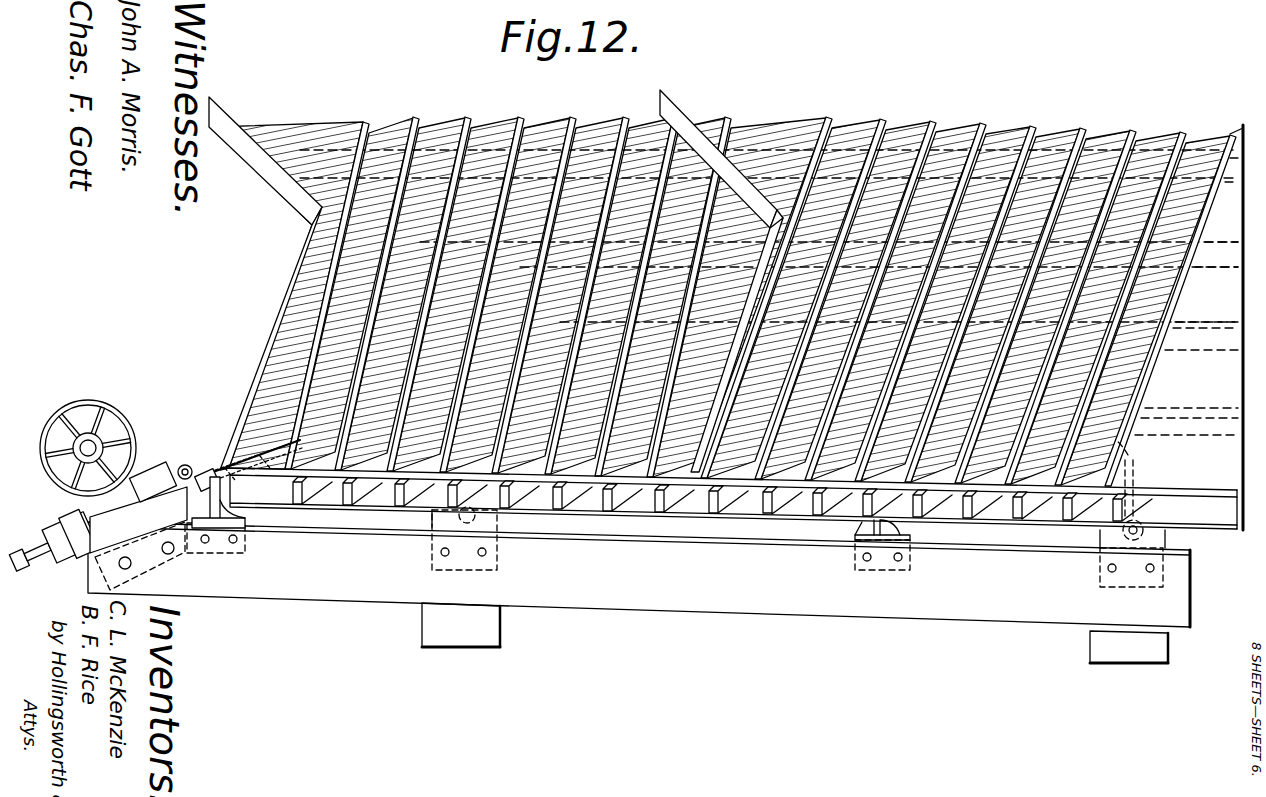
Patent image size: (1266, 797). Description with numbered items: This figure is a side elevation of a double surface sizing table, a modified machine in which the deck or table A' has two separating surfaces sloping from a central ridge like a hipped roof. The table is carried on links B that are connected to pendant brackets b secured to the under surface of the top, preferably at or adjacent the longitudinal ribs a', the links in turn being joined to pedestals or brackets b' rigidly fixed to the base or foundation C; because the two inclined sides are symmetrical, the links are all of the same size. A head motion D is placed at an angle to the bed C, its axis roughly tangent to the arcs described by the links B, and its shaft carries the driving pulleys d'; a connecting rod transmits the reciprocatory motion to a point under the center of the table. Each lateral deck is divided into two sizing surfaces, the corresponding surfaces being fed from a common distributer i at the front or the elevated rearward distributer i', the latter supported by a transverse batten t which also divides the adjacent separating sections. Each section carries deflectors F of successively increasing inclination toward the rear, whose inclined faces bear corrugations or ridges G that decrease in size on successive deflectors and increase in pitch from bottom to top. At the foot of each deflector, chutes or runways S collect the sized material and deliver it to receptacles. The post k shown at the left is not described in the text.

The corrugations or ridges G is at (725, 301).
The slat edge strips f' is at (742, 284).
The deflector F is at (1012, 140).
The slat strip f is at (881, 286).
The distributer i is at (265, 280).
The rearward distributer or feed section i' is at (721, 156).
The transverse batten t is at (737, 345).
The deck or table A' is at (1214, 327).
The longitudinal ribs a' is at (1186, 296).
The chutes or runways S is at (729, 498).
The base or foundation C is at (730, 592).
The pendant brackets b is at (443, 538).
The pedestals or brackets b' is at (857, 550).
The links B is at (1136, 518).
The driving pulleys d' is at (96, 444).
The head motion D is at (124, 526).
The post k is at (216, 502).